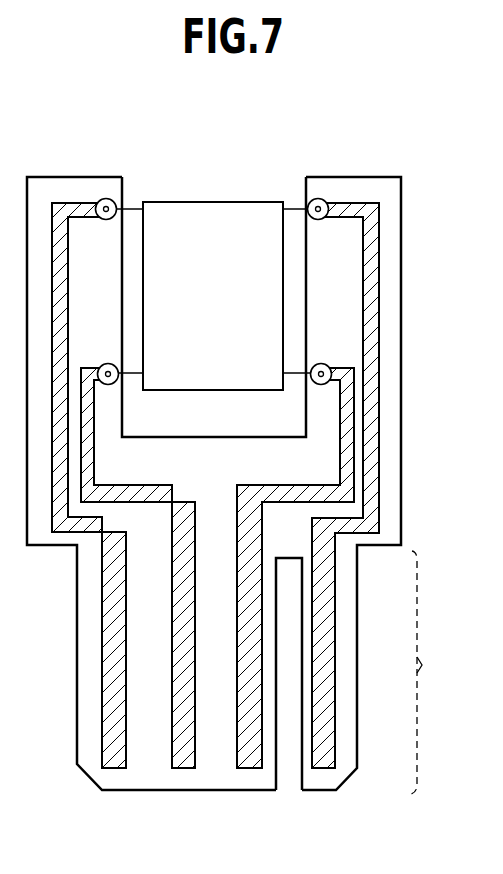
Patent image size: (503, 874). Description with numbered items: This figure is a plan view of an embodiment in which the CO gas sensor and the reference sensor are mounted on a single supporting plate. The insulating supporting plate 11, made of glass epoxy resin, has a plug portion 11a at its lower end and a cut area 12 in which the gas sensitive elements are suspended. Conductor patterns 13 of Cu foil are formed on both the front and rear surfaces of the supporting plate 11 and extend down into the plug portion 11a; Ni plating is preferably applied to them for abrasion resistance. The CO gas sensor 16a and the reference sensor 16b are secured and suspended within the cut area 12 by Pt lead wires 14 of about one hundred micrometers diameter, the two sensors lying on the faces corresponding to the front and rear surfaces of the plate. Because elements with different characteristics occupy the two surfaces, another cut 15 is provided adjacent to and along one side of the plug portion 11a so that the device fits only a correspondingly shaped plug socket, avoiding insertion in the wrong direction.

The insulating supporting plate 11 is at (383, 188).
The plug portion 11a is at (435, 672).
The cut area 12 is at (294, 192).
The conductor patterns 13 is at (377, 283).
The lead wires 14 is at (137, 203).
The cut 15 is at (285, 783).
The CO gas sensor 16a is at (228, 222).
The reference sensor 16b is at (183, 233).